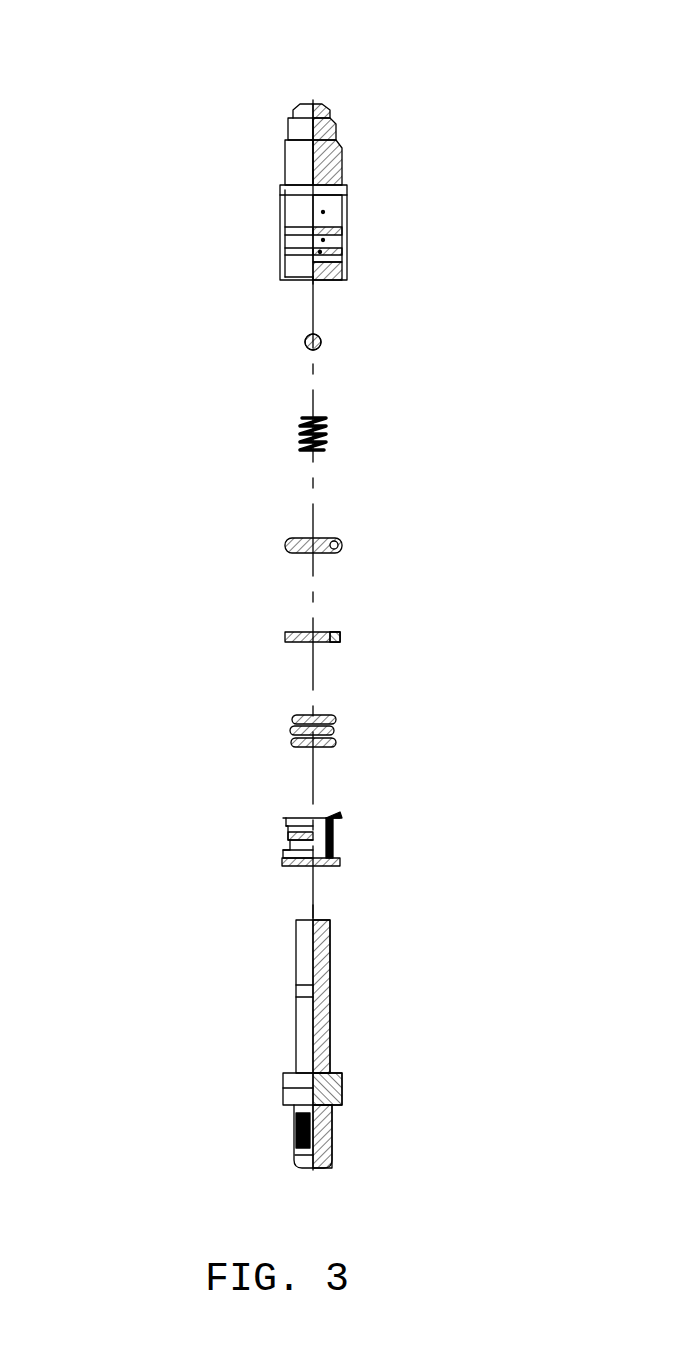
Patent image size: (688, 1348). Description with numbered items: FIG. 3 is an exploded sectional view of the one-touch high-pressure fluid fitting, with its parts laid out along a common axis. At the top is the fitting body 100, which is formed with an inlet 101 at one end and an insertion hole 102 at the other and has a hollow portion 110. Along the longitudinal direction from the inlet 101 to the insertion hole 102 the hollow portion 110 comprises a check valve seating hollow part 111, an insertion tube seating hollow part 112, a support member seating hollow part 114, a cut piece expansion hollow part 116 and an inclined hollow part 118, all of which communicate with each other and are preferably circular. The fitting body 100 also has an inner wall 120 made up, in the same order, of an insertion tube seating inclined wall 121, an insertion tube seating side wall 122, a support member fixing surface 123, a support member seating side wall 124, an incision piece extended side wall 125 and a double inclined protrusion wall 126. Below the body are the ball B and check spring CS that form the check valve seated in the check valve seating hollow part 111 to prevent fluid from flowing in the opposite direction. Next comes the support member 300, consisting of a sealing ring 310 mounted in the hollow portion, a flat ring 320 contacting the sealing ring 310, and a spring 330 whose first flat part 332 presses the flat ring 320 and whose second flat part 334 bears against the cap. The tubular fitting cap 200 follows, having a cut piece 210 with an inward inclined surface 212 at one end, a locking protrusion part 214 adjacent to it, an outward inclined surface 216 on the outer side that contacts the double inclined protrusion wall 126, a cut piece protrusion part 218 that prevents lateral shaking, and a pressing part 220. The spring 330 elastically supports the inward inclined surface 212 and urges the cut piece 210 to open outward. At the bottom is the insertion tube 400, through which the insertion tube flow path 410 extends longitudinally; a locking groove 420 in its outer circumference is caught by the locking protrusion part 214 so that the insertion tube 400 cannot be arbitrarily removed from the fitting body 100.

The fitting body 100 is at (313, 163).
The inlet 101 is at (313, 100).
The insertion hole 102 is at (330, 284).
The hollow portion 110 is at (195, 160).
The check valve seating hollow part 111 is at (303, 152).
The insertion tube seating hollow part 112 is at (300, 183).
The support member seating hollow part 114 is at (322, 212).
The cut piece expansion hollow part 116 is at (322, 240).
The inclined hollow part 118 is at (320, 252).
The inner wall 120 is at (470, 113).
The insertion tube seating inclined wall 121 is at (345, 180).
The insertion tube seating side wall 122 is at (345, 190).
The support member fixing surface 123 is at (345, 197).
The support member seating side wall 124 is at (347, 208).
The incision piece extended side wall 125 is at (347, 240).
The double inclined protrusion wall 126 is at (347, 255).
The ball B is at (305, 345).
The check spring CS is at (302, 420).
The support member 300 is at (145, 705).
The sealing ring 310 is at (287, 545).
The flat ring 320 is at (287, 636).
The spring 330 is at (290, 729).
The first flat part 332 is at (322, 718).
The second flat part 334 is at (325, 745).
The fitting cap 200 is at (316, 848).
The cut piece 210 is at (399, 835).
The inward inclined surface 212 is at (330, 818).
The locking protrusion part 214 is at (335, 828).
The outward inclined surface 216 is at (338, 840).
The cut piece protrusion part 218 is at (335, 855).
The pressing part 220 is at (340, 866).
The insertion tube 400 is at (316, 1044).
The insertion tube flow path 410 is at (283, 1085).
The locking groove 420 is at (296, 990).